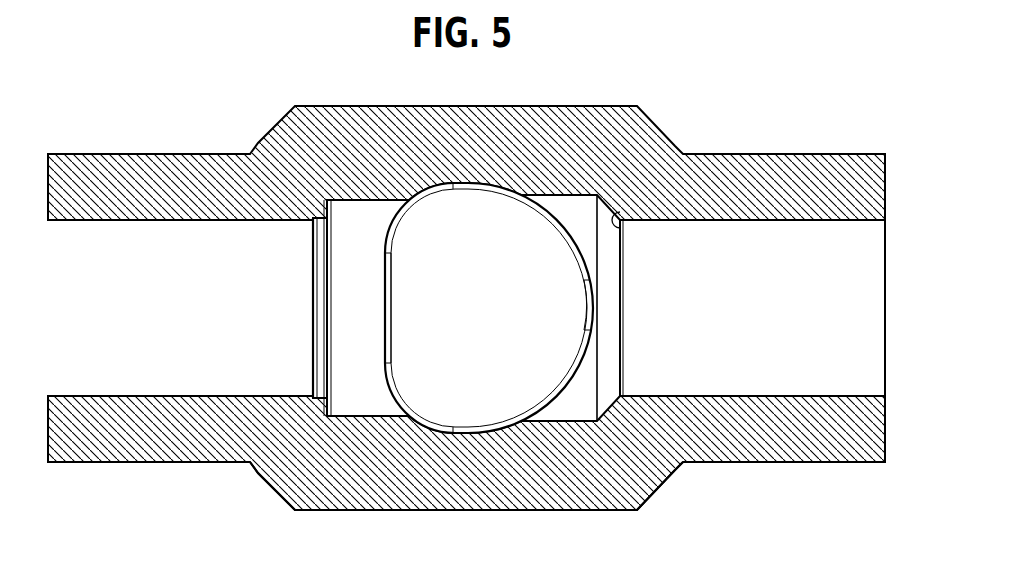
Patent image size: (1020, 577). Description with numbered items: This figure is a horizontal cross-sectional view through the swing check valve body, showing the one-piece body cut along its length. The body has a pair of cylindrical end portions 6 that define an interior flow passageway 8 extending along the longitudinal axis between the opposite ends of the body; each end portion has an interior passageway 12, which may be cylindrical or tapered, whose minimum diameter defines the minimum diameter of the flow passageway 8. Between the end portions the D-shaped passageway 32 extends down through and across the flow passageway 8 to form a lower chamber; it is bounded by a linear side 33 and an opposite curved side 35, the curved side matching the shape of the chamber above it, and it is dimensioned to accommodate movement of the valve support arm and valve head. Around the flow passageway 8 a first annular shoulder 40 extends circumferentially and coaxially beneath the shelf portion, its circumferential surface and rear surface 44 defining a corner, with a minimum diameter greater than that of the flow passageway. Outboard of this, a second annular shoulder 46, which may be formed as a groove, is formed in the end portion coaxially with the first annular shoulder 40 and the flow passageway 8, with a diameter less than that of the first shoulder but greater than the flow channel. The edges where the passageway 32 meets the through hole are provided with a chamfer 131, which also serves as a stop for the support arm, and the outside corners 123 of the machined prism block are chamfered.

The cylindrical end portions 6 is at (790, 154).
The interior flow passageway 8 is at (857, 328).
The interior passageway 12 is at (873, 274).
The D-shaped passageway 32 is at (488, 378).
The linear side 33 is at (397, 310).
The curved side 35 is at (582, 295).
The annular shoulder 40 is at (376, 215).
The rear surface 44 is at (330, 207).
The second annular shoulder 46 is at (310, 338).
The outside corners 123 is at (285, 500).
The chamfer 131 is at (622, 231).